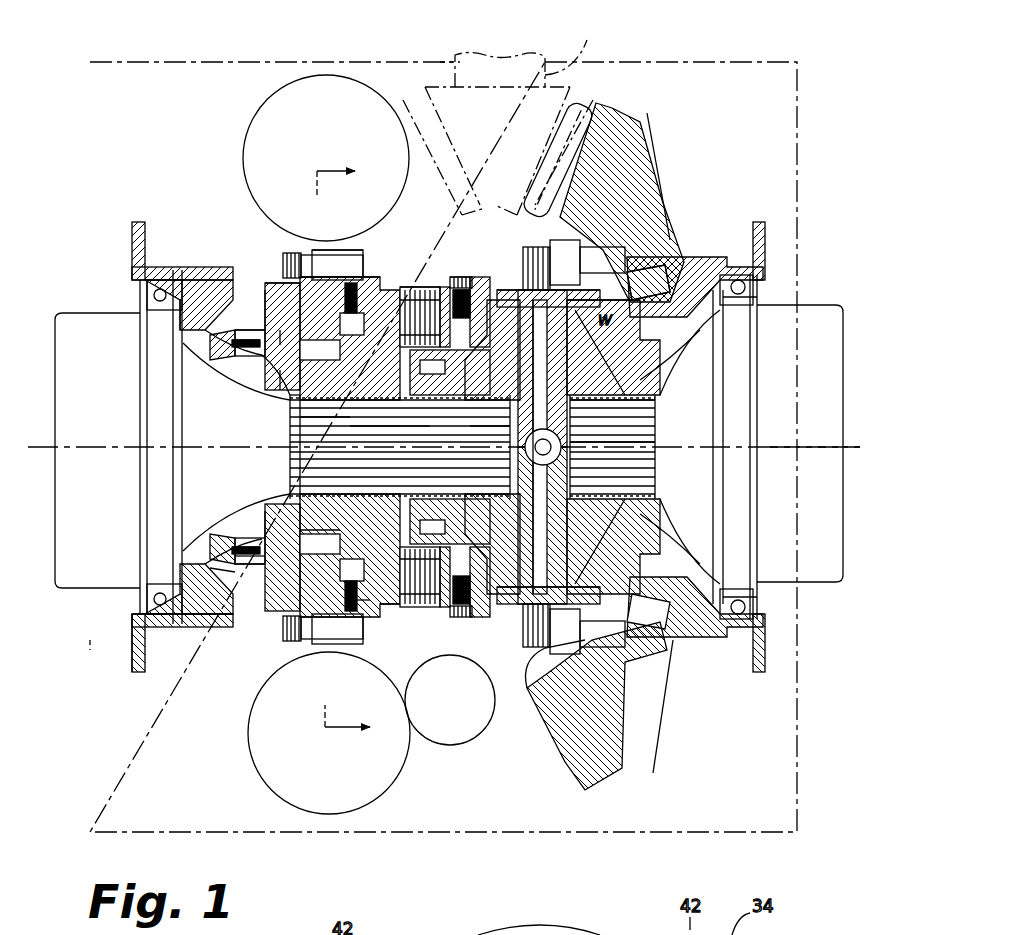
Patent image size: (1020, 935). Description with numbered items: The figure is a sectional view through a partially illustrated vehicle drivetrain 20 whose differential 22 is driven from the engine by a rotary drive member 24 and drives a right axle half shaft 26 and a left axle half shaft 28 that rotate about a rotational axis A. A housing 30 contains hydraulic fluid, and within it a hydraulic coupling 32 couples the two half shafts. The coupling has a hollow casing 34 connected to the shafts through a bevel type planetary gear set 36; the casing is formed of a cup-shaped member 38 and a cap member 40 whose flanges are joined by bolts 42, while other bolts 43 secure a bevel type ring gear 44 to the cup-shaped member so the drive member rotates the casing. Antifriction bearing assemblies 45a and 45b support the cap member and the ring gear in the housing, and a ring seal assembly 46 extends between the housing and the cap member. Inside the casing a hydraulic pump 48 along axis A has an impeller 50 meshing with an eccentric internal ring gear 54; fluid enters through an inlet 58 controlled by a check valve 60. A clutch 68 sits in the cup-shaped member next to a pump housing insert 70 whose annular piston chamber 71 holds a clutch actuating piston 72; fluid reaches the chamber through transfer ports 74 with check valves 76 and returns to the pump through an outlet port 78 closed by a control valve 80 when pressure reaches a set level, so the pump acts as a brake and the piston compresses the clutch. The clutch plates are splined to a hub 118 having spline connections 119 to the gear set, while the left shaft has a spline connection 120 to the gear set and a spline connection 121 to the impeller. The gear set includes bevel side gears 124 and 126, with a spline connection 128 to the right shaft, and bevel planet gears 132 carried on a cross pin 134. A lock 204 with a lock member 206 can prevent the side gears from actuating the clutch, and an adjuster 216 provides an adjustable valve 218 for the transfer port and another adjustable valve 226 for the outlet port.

The vehicle drivetrain 20 is at (90, 645).
The differential 22 is at (340, 58).
The rotary drive member 24 is at (548, 60).
The right axle half shaft 26 is at (805, 305).
The left axle half shaft 28 is at (78, 313).
The housing 30 is at (800, 195).
The hydraulic coupling 32 is at (166, 694).
The casing 34 is at (446, 632).
The bevel type planetary gear set 36 is at (600, 378).
The cup-shaped member 38 is at (512, 620).
The cap member 40 is at (236, 577).
The bolts 42 is at (302, 270).
The bolts 43 is at (600, 250).
The bevel type ring gear 44 is at (608, 132).
The antifriction bearing assembly 45a is at (197, 328).
The antifriction bearing assembly 45b is at (680, 254).
The ring seal assembly 46 is at (282, 285).
The hydraulic pump 48 is at (288, 287).
The impeller 50 is at (265, 376).
The internal ring gear 54 is at (240, 562).
The inlet 58 is at (270, 352).
The check valve 60 is at (250, 347).
The clutch 68 is at (405, 290).
The pump housing insert 70 is at (375, 282).
The annular piston chamber 71 is at (380, 650).
The clutch actuating piston 72 is at (380, 622).
The transfer ports 74 is at (270, 540).
The check valve 76 is at (312, 545).
The outlet port 78 is at (283, 317).
The control valve 80 is at (282, 372).
The hub 118 is at (330, 423).
The spline connections 119 is at (330, 431).
The spline connection 120 is at (378, 431).
The spline connection 121 is at (292, 396).
The bevel side gear 124 is at (660, 393).
The bevel side gear 126 is at (470, 431).
The spline connection 128 is at (655, 420).
The bevel planet gears 132 is at (488, 300).
The cross pin 134 is at (520, 313).
The lock 204 is at (452, 275).
The lock member 206 is at (477, 244).
The adjuster 216 is at (237, 633).
The adjustable valve 218 is at (217, 622).
The adjustable valve 226 is at (330, 265).
The rotational axis A is at (777, 447).